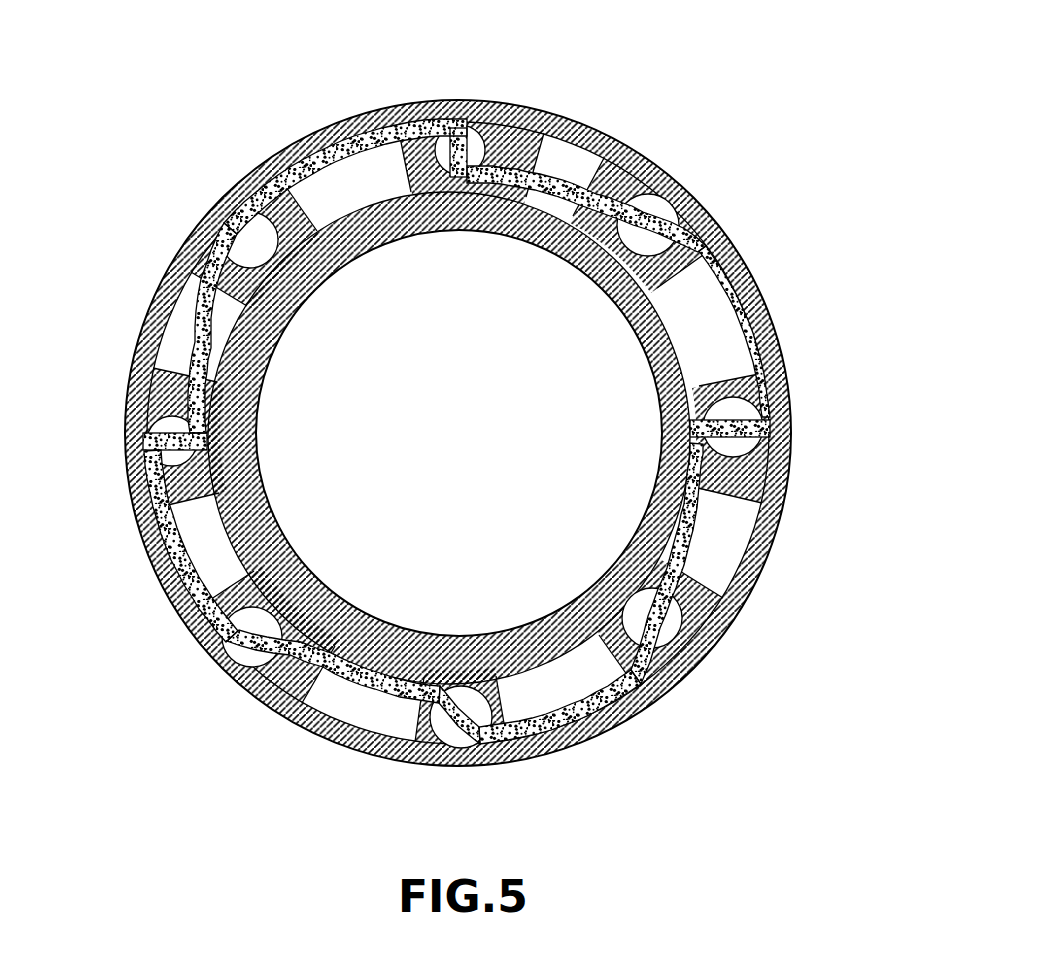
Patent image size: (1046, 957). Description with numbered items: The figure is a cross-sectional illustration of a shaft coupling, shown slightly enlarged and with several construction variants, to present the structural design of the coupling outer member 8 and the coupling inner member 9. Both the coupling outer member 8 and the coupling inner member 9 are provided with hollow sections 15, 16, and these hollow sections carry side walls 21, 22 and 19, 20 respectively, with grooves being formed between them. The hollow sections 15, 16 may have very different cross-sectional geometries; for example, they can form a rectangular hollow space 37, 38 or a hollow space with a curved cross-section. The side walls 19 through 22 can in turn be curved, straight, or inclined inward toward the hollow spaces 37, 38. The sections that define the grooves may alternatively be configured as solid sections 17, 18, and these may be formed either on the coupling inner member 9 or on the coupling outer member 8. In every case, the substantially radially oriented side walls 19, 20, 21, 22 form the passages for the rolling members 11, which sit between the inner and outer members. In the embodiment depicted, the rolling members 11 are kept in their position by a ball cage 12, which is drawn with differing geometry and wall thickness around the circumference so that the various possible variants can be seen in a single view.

The coupling outer member 8 is at (178, 605).
The coupling inner member 9 is at (560, 617).
The rolling members 11 is at (489, 138).
The ball cage 12 is at (332, 138).
The hollow section 15 is at (700, 500).
The hollow section 16 is at (765, 318).
The solid section 17 is at (180, 340).
The solid section 18 is at (207, 527).
The side wall 19 is at (735, 385).
The side wall 20 is at (662, 278).
The side wall 21 is at (586, 132).
The side wall 22 is at (695, 590).
The hollow space 37 is at (353, 710).
The hollow space 38 is at (567, 683).